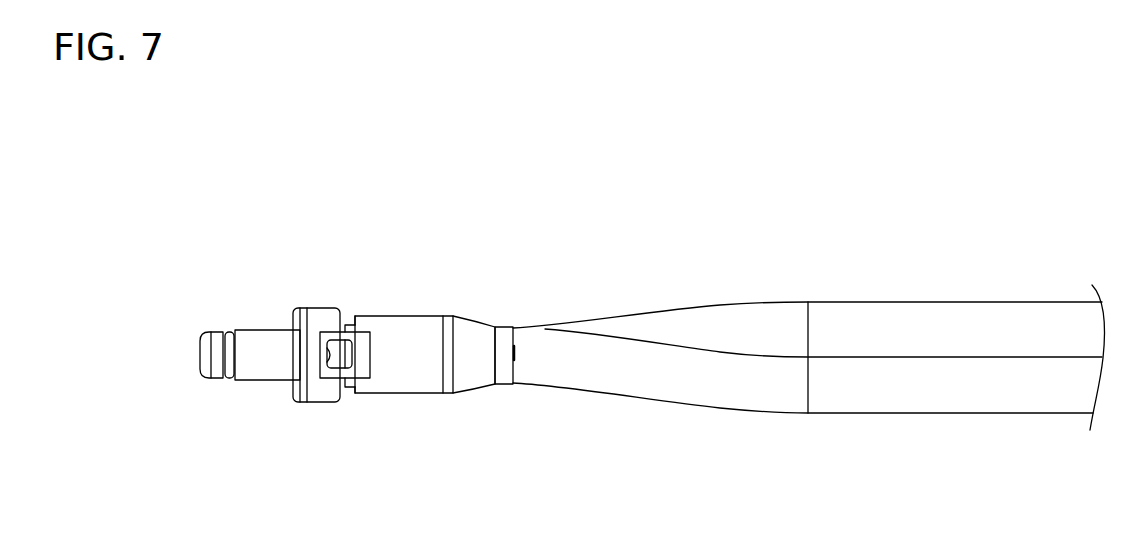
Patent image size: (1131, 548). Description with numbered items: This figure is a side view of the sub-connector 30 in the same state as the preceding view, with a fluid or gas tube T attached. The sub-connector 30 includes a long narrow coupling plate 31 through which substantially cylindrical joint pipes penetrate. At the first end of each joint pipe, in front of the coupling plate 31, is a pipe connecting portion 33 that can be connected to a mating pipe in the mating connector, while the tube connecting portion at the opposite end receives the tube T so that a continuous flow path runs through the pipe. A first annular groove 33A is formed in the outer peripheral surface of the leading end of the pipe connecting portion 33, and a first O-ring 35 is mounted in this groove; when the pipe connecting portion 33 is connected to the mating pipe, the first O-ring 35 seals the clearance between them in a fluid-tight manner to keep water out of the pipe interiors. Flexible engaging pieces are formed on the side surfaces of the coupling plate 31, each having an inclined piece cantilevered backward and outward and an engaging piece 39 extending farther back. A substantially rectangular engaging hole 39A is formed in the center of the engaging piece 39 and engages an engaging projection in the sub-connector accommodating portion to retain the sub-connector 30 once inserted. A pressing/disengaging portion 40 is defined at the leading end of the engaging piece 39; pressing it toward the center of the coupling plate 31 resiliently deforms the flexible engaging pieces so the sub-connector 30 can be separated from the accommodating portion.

The sub-connector 30 is at (300, 252).
The coupling plate 31 is at (320, 318).
The pipe connecting portion 33 is at (268, 367).
The first annular groove 33A is at (227, 363).
The first O-ring 35 is at (229, 333).
The engaging piece 39 is at (345, 380).
The engaging hole 39A is at (333, 357).
The pressing/disengaging portion 40 is at (360, 373).
The tube T is at (735, 325).